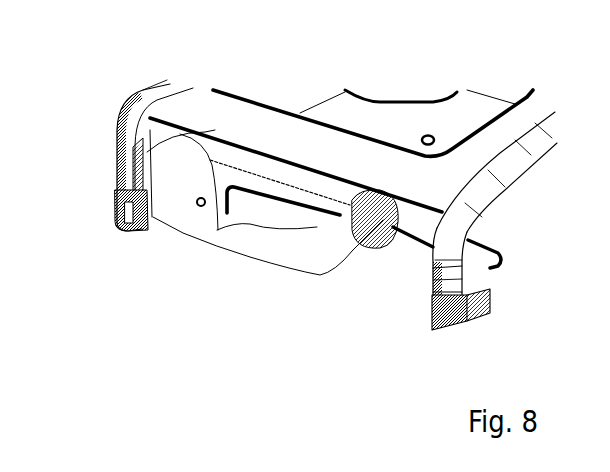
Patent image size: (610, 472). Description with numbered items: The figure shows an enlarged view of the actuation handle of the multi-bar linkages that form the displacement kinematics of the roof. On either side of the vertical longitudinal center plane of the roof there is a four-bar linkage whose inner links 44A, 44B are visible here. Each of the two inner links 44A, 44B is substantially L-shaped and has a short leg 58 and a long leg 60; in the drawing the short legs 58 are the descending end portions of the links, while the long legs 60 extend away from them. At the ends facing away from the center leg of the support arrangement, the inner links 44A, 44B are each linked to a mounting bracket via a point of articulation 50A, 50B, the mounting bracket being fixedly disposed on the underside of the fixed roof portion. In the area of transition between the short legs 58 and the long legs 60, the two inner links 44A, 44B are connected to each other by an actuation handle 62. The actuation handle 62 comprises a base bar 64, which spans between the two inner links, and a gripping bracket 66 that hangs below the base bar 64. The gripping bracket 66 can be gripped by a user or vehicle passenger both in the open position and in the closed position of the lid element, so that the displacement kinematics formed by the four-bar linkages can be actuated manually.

The inner link 44A is at (123, 108).
The inner link 44B is at (488, 203).
The long leg 60 is at (157, 92).
The base bar 64 is at (237, 152).
The short leg 58 is at (127, 167).
The point of articulation 50A is at (137, 212).
The point of articulation 50B is at (465, 322).
The gripping bracket 66 is at (208, 232).
The actuation handle 62 is at (293, 272).